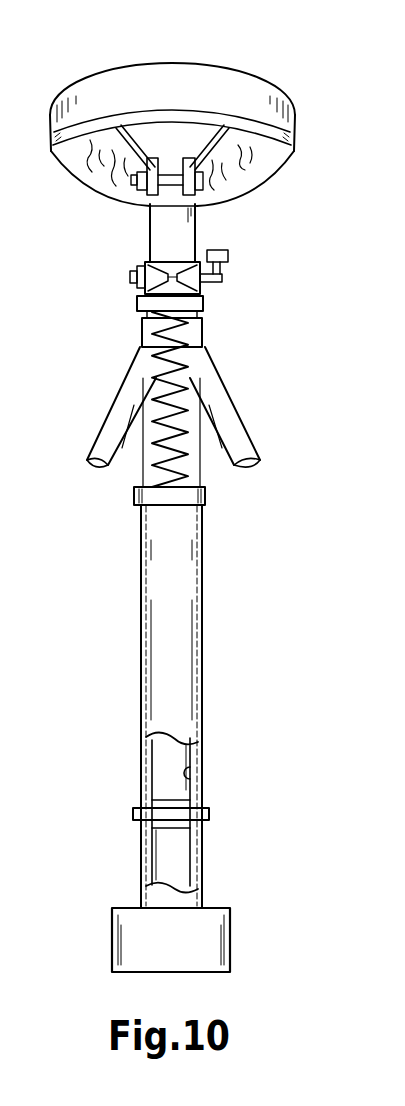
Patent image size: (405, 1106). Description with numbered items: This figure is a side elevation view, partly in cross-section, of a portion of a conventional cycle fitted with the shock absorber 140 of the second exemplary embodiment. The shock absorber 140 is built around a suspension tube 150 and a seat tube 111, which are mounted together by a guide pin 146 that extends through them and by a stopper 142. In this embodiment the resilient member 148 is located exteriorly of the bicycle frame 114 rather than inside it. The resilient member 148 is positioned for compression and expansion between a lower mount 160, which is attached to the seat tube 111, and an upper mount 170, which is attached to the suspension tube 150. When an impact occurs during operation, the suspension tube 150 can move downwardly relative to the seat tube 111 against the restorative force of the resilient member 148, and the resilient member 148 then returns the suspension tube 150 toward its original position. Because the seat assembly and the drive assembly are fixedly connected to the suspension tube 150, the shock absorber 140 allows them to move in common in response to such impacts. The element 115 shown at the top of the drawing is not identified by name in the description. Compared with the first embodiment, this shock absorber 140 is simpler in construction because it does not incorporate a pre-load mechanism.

The reflector dish 115 is at (167, 83).
The suspension tube 150 is at (168, 291).
The upper mount 170 is at (185, 303).
The resilient member 148 is at (185, 400).
The bicycle frame 114 is at (122, 408).
The lower mount 160 is at (185, 494).
The shock absorber 140 is at (144, 738).
The seat tube 111 is at (142, 768).
The stopper 142 is at (178, 808).
The guide pin 146 is at (167, 821).